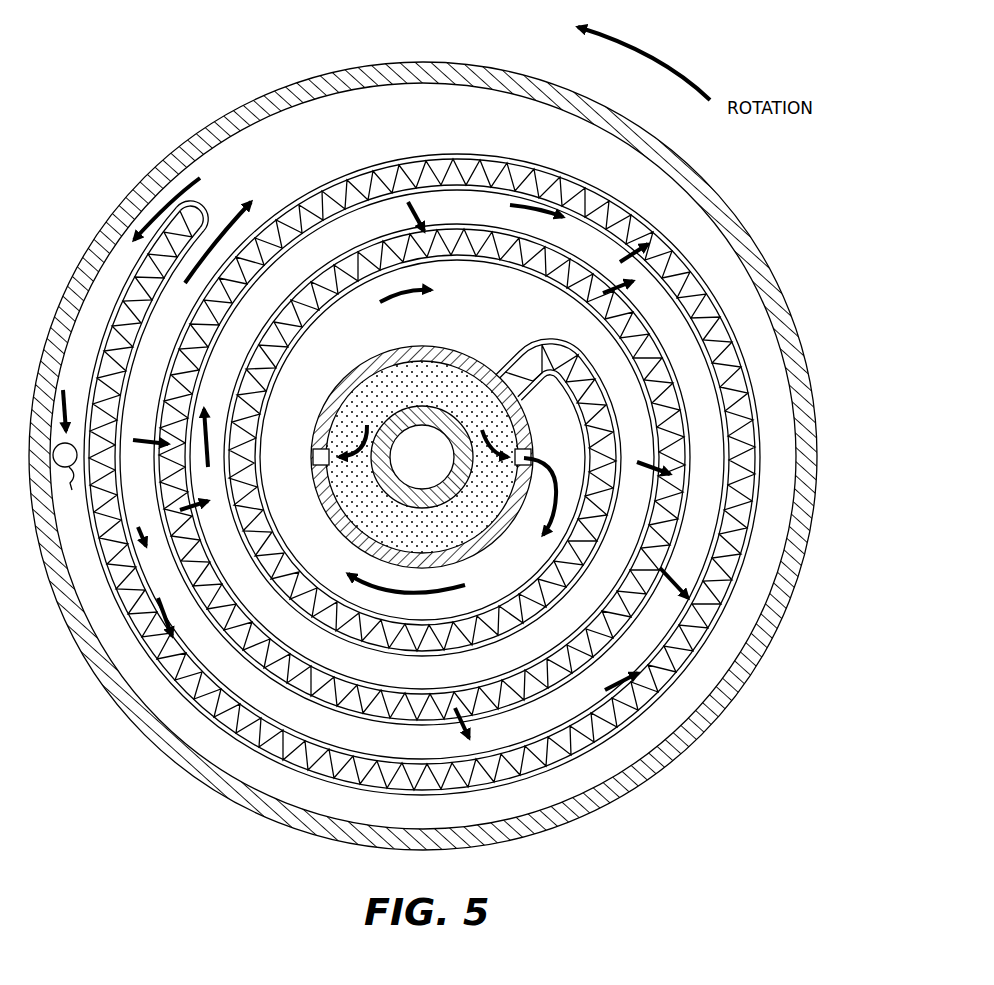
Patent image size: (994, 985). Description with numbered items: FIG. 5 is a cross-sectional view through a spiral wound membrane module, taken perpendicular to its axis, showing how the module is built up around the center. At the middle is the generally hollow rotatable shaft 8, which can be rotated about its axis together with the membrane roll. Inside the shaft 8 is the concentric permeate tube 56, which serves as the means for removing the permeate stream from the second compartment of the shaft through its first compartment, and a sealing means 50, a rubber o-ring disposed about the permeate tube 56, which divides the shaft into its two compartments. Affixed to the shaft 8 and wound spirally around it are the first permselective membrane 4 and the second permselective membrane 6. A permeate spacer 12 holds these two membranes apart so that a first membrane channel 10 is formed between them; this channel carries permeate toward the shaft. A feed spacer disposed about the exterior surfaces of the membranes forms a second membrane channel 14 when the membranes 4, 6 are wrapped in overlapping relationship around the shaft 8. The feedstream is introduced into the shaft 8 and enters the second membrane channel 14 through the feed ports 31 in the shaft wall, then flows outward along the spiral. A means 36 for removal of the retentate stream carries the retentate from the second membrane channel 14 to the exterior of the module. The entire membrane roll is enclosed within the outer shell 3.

The outer shell 3 is at (817, 534).
The first permselective membrane 4 is at (757, 437).
The second permselective membrane 6 is at (714, 428).
The rotatable shaft 8 is at (445, 347).
The first membrane channel 10 is at (720, 372).
The permeate spacer 12 is at (660, 278).
The second membrane channel 14 is at (459, 215).
The feed ports 31 is at (531, 455).
The means for removal of a retentate stream 36 is at (68, 482).
The sealing means 50 is at (412, 530).
The concentric permeate tube 56 is at (407, 410).